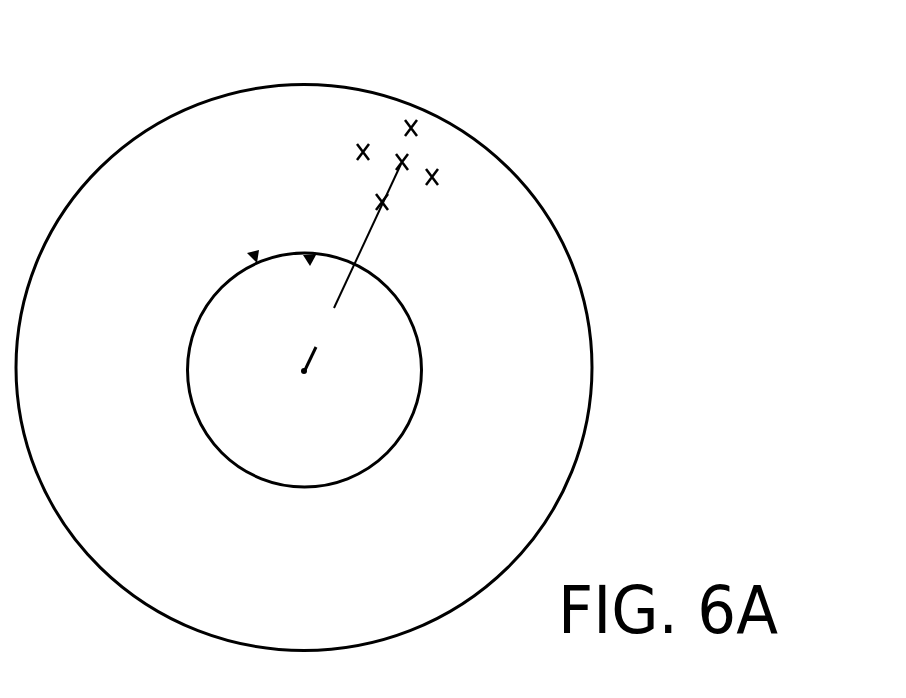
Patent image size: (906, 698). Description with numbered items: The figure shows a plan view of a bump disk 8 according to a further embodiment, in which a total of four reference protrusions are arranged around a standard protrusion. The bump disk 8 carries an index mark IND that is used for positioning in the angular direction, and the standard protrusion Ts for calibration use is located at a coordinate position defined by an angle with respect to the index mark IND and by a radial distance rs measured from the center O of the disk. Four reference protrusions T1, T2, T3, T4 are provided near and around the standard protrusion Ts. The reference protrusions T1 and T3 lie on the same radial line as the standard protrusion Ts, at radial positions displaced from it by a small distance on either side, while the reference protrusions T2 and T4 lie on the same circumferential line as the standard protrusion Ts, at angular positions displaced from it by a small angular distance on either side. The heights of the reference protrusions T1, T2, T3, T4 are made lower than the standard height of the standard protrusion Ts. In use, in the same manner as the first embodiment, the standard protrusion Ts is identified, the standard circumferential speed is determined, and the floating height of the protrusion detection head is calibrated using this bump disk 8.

The bump disk 8 is at (125, 170).
The index mark IND is at (283, 262).
The radial distance rs is at (358, 254).
The center O is at (304, 381).
The reference protrusion T1 is at (411, 120).
The reference protrusion T2 is at (440, 177).
The reference protrusion T3 is at (384, 207).
The reference protrusion T4 is at (362, 145).
The standard protrusion Ts is at (404, 160).